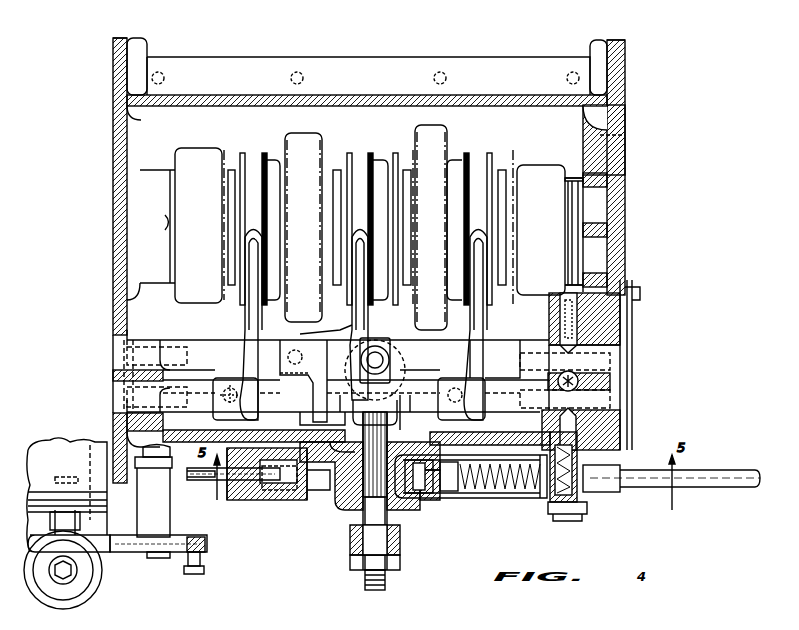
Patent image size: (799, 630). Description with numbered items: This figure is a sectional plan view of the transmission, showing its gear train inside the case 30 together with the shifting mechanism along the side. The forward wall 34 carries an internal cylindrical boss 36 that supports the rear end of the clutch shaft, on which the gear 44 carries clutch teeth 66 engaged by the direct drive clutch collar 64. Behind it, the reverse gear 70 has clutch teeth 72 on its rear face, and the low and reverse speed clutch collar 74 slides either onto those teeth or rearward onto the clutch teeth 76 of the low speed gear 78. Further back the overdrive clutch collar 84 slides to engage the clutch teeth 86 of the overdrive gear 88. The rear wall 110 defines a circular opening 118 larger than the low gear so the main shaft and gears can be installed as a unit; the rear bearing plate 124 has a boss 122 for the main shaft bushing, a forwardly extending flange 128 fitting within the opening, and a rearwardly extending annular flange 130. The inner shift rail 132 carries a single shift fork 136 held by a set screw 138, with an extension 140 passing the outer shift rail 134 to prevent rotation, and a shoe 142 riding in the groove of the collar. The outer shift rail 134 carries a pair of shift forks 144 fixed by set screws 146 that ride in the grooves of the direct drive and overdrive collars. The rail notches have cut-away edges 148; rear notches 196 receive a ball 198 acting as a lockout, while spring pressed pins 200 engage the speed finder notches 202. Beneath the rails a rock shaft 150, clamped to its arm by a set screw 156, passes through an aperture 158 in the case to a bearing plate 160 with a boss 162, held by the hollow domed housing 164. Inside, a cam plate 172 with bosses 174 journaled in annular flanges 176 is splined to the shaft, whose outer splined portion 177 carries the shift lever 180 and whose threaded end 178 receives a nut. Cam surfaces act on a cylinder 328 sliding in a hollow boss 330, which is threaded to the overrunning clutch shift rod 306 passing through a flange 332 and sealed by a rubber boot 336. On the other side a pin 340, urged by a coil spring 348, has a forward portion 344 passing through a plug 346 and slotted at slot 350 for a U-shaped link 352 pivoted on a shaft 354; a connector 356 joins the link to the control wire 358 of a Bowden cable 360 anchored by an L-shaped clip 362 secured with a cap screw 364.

The case 30 is at (383, 95).
The forward wall 34 is at (113, 222).
The internal cylindrical boss 36 is at (160, 170).
The gear 44 is at (200, 160).
The direct drive clutch collar 64 is at (252, 162).
The clutch teeth 66 is at (232, 170).
The reverse gear 70 is at (305, 145).
The clutch teeth 72 is at (337, 170).
The low and reverse speed clutch collar 74 is at (350, 158).
The clutch teeth 76 is at (383, 172).
The low speed gear 78 is at (435, 135).
The overdrive clutch collar 84 is at (475, 148).
The clutch teeth 86 is at (501, 170).
The overdrive gear 88 is at (532, 172).
The rear wall 110 is at (618, 158).
The circular opening 118 is at (616, 137).
The boss 122 is at (597, 197).
The rear bearing plate 124 is at (625, 272).
The forwardly extending flange 128 is at (605, 270).
The rearwardly extending annular flange 130 is at (645, 290).
The inner shift rail 132 is at (198, 352).
The outer shift rail 134 is at (200, 398).
The shift fork 136 is at (364, 324).
The set screw 138 is at (293, 345).
The extension 140 is at (312, 408).
The shoe 142 is at (366, 300).
The shift forks 144 is at (255, 318).
The set screws 146 is at (230, 378).
The cut away edges 148 is at (393, 362).
The rock shaft 150 is at (360, 548).
The set screw 156 is at (325, 440).
The aperture 158 is at (305, 428).
The bearing plate 160 is at (325, 422).
The boss 162 is at (358, 415).
The hollow domed housing 164 is at (445, 500).
The cam plate 172 is at (345, 495).
The bosses 174 is at (402, 420).
The annular flanges 176 is at (363, 500).
The outer splined portion 177 is at (392, 545).
The threaded end 178 is at (385, 585).
The shift lever 180 is at (350, 565).
The notches 196 is at (557, 372).
The ball 198 is at (578, 386).
The pins 200 is at (562, 343).
The speed finder notches 202 is at (585, 347).
The overrunning clutch shift rod 306 is at (715, 487).
The cylinder 328 is at (470, 495).
The hollow boss 330 is at (525, 500).
The flange 332 is at (652, 484).
The rubber boot 336 is at (575, 527).
The pin 340 is at (271, 474).
The forward portion 344 is at (262, 500).
The plug 346 is at (285, 522).
The coil spring 348 is at (305, 492).
The slot 350 is at (205, 481).
The U-shaped link 352 is at (190, 500).
The shaft 354 is at (165, 558).
The connector 356 is at (202, 560).
The control wire 358 is at (207, 543).
The Bowden cable 360 is at (100, 552).
The L-shaped clip 362 is at (95, 578).
The cap screw 364 is at (92, 472).